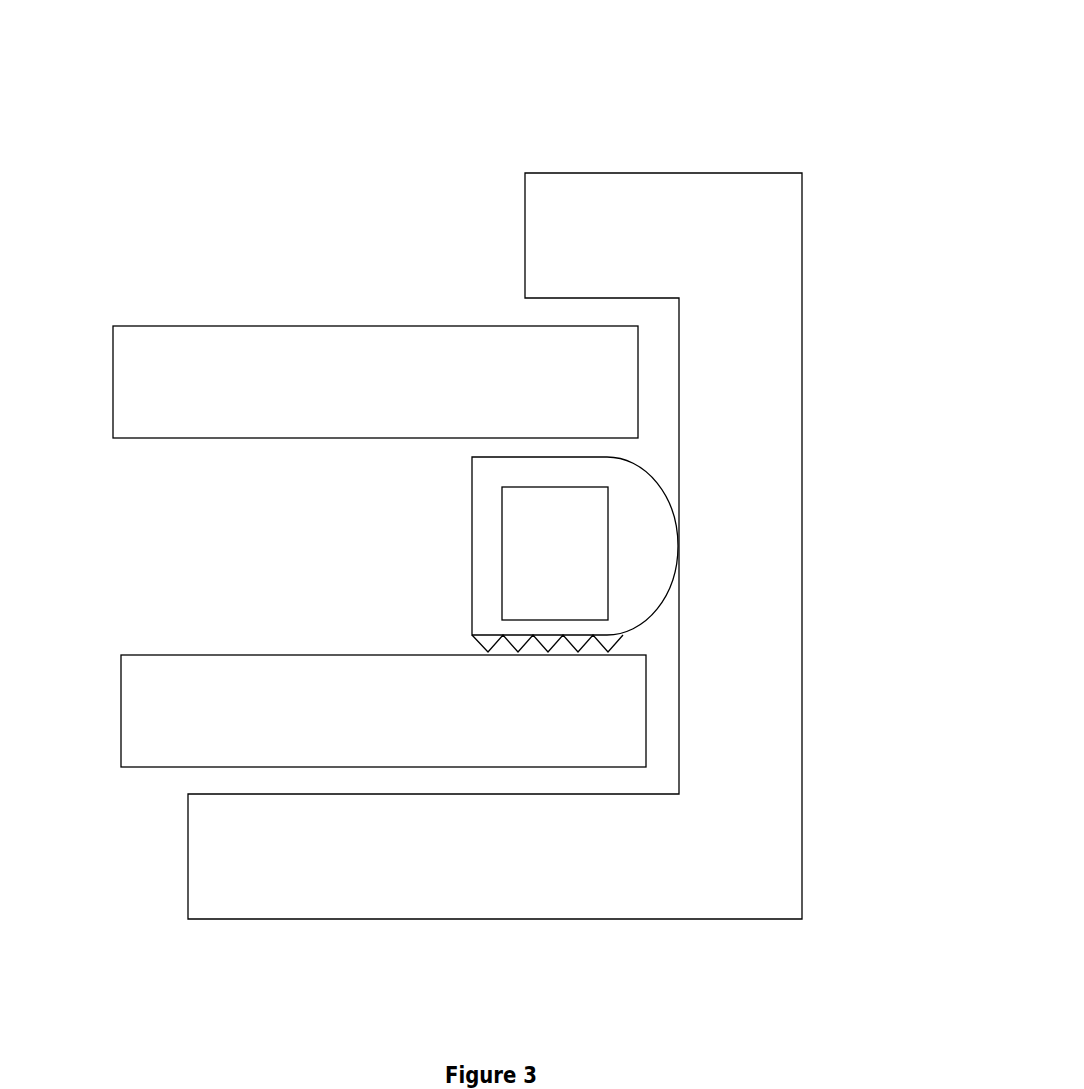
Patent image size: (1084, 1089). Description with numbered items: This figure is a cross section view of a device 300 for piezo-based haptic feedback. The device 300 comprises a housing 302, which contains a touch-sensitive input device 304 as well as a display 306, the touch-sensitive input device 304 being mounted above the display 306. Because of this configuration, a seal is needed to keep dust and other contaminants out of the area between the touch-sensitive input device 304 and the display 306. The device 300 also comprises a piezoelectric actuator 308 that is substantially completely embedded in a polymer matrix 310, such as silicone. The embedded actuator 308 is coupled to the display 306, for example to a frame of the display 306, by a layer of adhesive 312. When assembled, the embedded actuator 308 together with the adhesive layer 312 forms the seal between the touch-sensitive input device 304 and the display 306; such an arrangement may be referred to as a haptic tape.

The device 300 is at (740, 148).
The housing 302 is at (802, 173).
The touch-sensitive input device 304 is at (313, 326).
The display 306 is at (121, 720).
The piezoelectric actuator 308 is at (608, 576).
The polymer matrix 310 is at (652, 477).
The layer of adhesive 312 is at (608, 652).